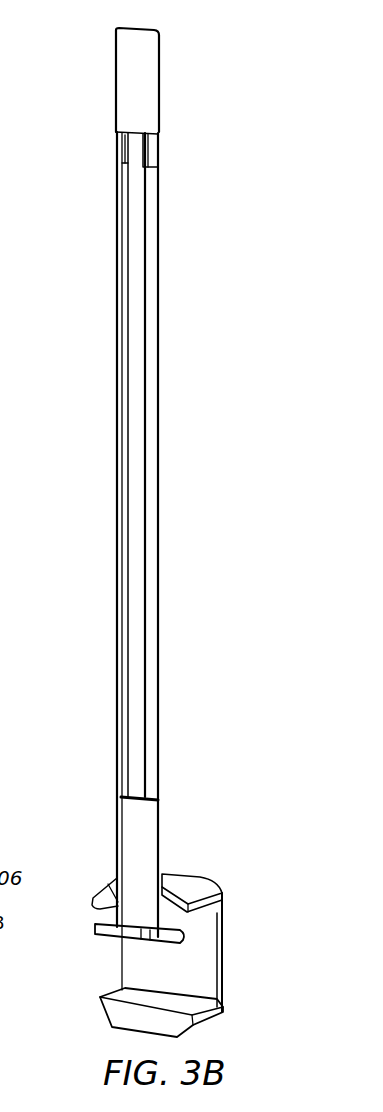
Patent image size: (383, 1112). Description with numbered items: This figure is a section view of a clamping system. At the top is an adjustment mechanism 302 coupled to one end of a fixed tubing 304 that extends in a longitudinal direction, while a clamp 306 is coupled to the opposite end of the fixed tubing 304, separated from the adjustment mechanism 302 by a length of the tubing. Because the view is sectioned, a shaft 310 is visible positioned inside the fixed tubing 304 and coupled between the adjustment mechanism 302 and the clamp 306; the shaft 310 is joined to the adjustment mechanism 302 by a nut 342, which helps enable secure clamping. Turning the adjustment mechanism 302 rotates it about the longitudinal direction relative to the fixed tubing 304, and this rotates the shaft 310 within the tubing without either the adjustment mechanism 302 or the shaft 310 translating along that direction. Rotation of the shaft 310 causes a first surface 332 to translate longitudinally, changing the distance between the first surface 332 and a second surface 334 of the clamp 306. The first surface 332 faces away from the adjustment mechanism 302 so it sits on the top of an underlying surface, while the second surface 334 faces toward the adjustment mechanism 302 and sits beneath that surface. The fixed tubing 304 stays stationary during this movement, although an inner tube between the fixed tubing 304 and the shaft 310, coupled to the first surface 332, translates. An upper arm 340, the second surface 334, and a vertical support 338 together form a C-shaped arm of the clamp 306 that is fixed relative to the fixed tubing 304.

The adjustment mechanism 302 is at (145, 88).
The fixed tubing 304 is at (162, 366).
The clamp 306 is at (178, 939).
The shaft 310 is at (147, 220).
The first surface 332 is at (92, 926).
The second surface 334 is at (102, 996).
The vertical support 338 is at (222, 963).
The upper arm 340 is at (167, 878).
The nut 342 is at (148, 152).